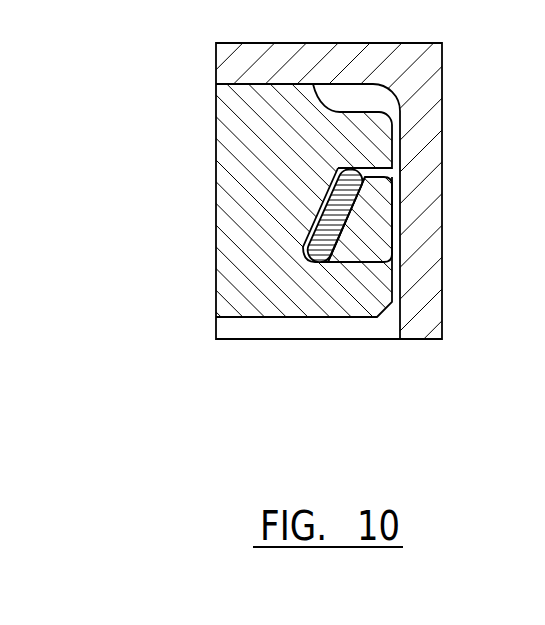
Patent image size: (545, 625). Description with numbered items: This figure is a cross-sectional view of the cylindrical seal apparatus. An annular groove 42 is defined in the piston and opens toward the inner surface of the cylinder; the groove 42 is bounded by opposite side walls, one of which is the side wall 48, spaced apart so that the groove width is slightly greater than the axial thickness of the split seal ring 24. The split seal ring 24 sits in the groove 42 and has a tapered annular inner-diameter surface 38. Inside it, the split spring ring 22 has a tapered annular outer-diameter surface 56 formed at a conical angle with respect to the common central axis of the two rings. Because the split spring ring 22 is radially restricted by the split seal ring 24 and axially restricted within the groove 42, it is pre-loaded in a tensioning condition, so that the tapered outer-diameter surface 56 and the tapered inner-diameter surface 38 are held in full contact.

The split spring ring 22 is at (300, 263).
The split seal ring 24 is at (383, 237).
The tapered annular inner-diameter surface 38 is at (338, 168).
The annular groove 42 is at (297, 247).
The side wall 48 is at (339, 264).
The tapered annular outer-diameter surface 56 is at (343, 228).